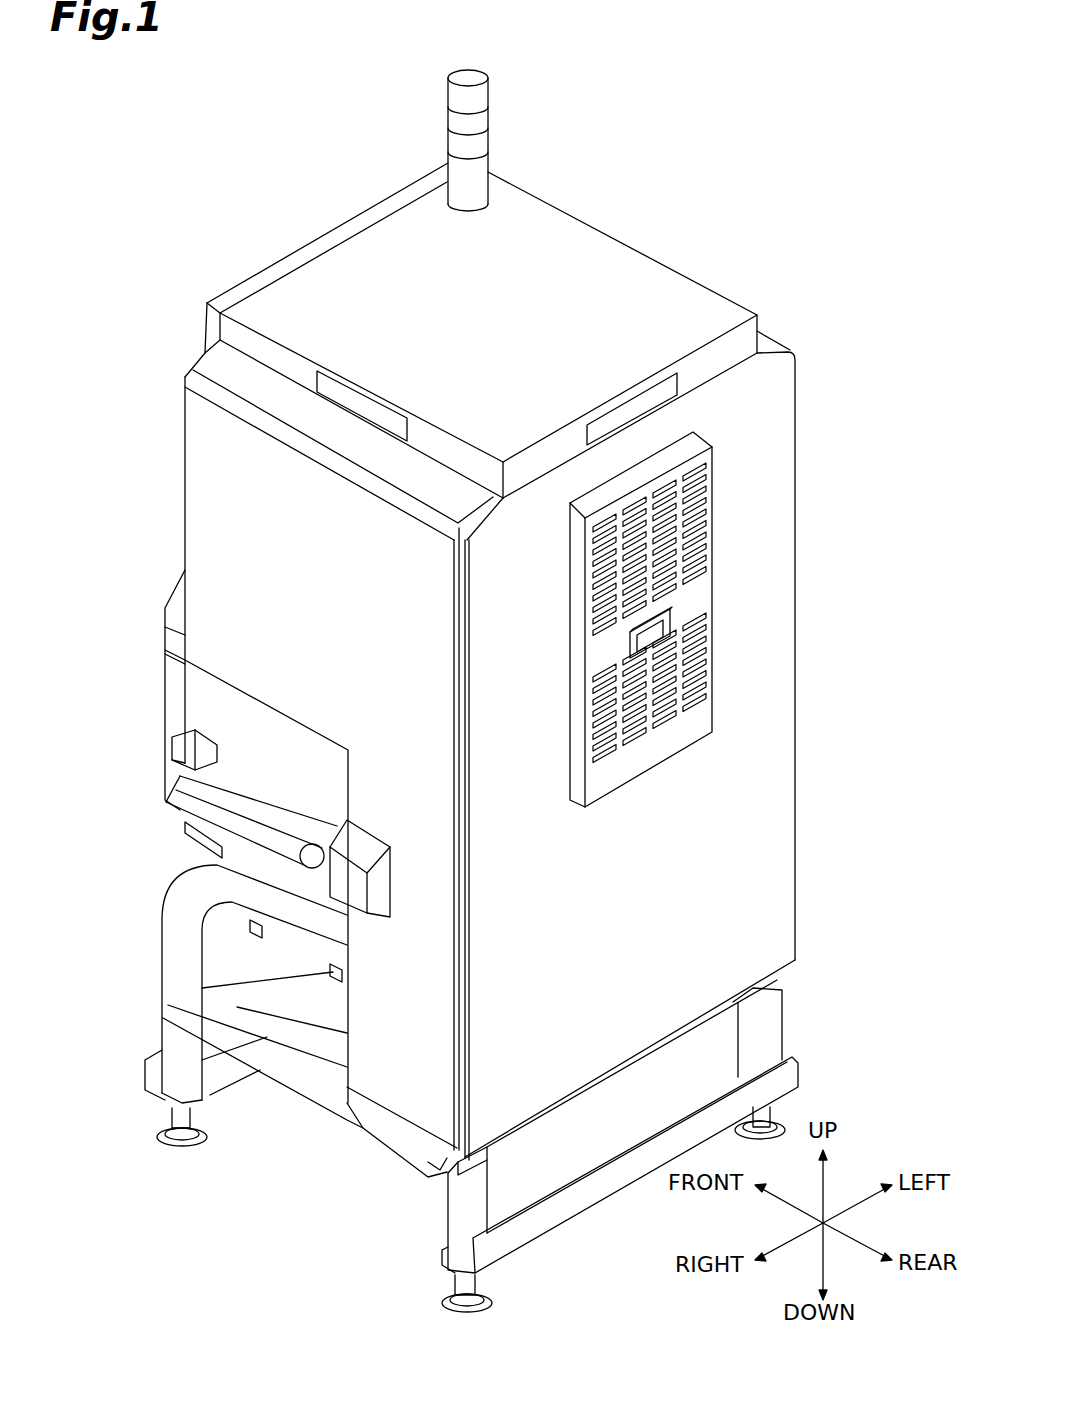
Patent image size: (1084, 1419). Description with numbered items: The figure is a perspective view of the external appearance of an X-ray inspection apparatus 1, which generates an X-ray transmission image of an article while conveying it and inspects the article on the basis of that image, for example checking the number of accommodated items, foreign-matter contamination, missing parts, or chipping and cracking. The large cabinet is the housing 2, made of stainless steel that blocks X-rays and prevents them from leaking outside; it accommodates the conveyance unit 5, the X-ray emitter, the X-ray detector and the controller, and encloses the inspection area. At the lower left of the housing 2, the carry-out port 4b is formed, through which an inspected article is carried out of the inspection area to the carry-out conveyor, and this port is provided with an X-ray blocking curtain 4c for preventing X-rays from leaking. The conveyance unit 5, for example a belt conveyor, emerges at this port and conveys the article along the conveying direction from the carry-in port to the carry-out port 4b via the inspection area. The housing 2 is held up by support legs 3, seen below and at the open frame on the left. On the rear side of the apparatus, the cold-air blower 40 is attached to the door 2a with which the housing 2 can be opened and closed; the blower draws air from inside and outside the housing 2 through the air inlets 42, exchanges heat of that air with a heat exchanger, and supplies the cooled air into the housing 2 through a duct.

The X-ray inspection apparatus 1 is at (661, 136).
The housing 2 is at (205, 497).
The door 2a is at (768, 767).
The support legs 3 is at (180, 953).
The carry-out port 4b is at (158, 742).
The X-ray blocking curtain 4c is at (198, 693).
The conveyance unit 5 is at (273, 817).
The cold-air blower 40 is at (718, 513).
The air inlets 42 is at (722, 483).